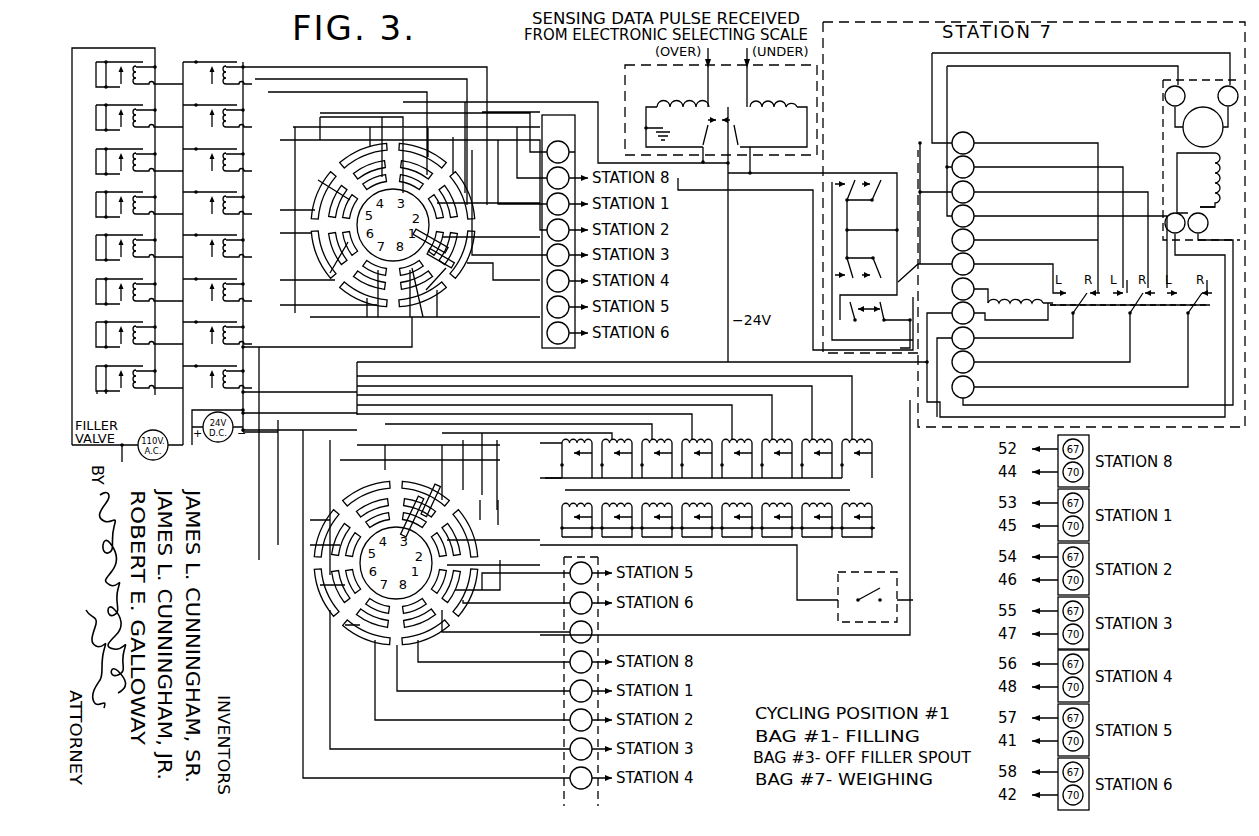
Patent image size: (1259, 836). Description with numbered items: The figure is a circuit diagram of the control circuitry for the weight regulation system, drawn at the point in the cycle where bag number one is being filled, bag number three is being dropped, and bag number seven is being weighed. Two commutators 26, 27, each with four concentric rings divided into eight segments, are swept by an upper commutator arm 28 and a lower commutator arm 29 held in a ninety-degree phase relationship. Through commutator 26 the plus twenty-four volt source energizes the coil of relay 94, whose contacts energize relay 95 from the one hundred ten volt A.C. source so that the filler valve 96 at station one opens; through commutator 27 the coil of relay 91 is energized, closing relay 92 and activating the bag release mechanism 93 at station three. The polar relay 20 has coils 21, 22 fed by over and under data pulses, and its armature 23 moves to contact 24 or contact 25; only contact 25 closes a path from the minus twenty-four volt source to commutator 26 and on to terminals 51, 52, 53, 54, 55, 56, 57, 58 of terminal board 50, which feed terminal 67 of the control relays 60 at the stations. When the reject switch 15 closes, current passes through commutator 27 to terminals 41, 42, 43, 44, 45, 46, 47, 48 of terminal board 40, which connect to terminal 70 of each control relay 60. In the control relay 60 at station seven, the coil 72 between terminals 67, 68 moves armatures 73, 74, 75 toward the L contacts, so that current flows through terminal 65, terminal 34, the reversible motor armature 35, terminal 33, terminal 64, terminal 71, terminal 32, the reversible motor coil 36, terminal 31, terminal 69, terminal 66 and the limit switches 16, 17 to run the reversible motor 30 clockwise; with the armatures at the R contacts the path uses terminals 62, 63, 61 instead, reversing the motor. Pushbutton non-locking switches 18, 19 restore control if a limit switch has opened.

The reject switch 15 is at (874, 574).
The limit switch 16 is at (858, 320).
The limit switch 17 is at (881, 320).
The pushbutton non-locking switch 18 is at (859, 180).
The pushbutton non-locking switch 19 is at (859, 275).
The polar relay 20 is at (721, 110).
The polar relay coil 21 is at (671, 105).
The polar relay coil 22 is at (778, 105).
The polar relay armature 23 is at (740, 104).
The polar relay contact 24 is at (712, 131).
The polar relay contact 25 is at (735, 131).
The upper commutator 26 is at (383, 224).
The lower commutator 27 is at (395, 565).
The upper commutator arm 28 is at (466, 262).
The lower commutator arm 29 is at (428, 480).
The reversible motor 30 is at (1201, 160).
The terminal 31 is at (1198, 223).
The terminal 32 is at (1175, 223).
The terminal 33 is at (1175, 96).
The terminal 34 is at (1228, 96).
The reversible motor armature 35 is at (1203, 127).
The reversible motor coil 36 is at (1217, 168).
The terminal board 40 is at (581, 681).
The terminal 41 is at (581, 573).
The terminal 42 is at (581, 603).
The terminal 43 is at (581, 632).
The terminal 44 is at (581, 662).
The terminal 45 is at (581, 691).
The terminal 46 is at (581, 720).
The terminal 47 is at (581, 749).
The terminal 48 is at (581, 778).
The terminal board 50 is at (558, 231).
The terminal 51 is at (558, 152).
The terminal 52 is at (558, 178).
The terminal 53 is at (558, 204).
The terminal 54 is at (558, 230).
The terminal 55 is at (558, 255).
The terminal 56 is at (558, 281).
The terminal 57 is at (558, 307).
The terminal 58 is at (558, 333).
The control relay 60 is at (1034, 236).
The terminal 61 is at (963, 143).
The terminal 62 is at (963, 167).
The terminal 63 is at (963, 192).
The terminal 64 is at (963, 216).
The terminal 65 is at (963, 240).
The terminal 66 is at (963, 264).
The terminal 67 is at (963, 289).
The terminal 68 is at (963, 313).
The terminal 69 is at (963, 338).
The terminal 70 is at (963, 362).
The terminal 71 is at (963, 387).
The control relay coil 72 is at (1015, 292).
The control relay armature 73 is at (1084, 309).
The control relay armature 74 is at (1141, 309).
The control relay armature 75 is at (1199, 309).
The relay 91 is at (872, 443).
The relay 92 is at (872, 507).
The bag release mechanism 93 is at (730, 528).
The relay 94 is at (217, 234).
The relay 95 is at (130, 390).
The filler valve 96 is at (103, 389).